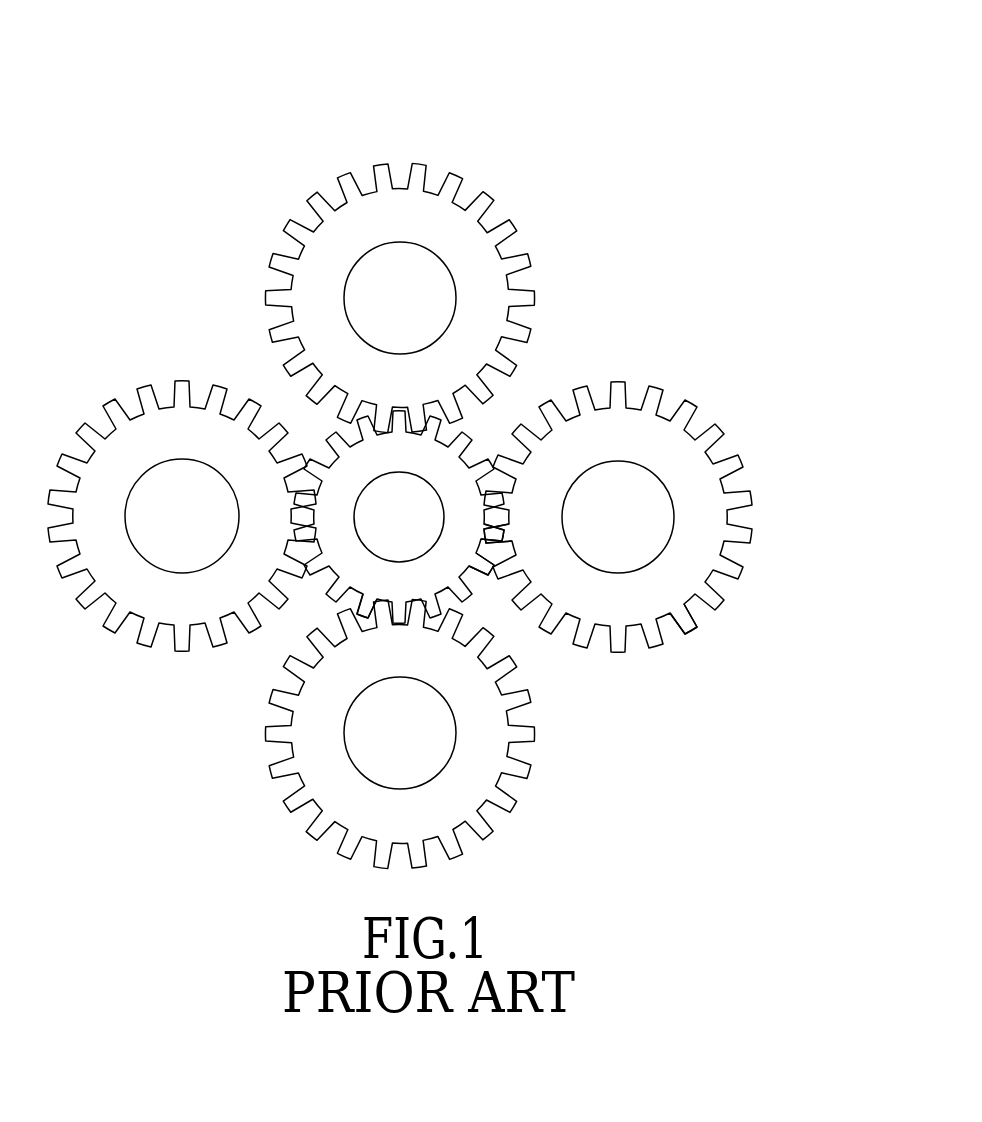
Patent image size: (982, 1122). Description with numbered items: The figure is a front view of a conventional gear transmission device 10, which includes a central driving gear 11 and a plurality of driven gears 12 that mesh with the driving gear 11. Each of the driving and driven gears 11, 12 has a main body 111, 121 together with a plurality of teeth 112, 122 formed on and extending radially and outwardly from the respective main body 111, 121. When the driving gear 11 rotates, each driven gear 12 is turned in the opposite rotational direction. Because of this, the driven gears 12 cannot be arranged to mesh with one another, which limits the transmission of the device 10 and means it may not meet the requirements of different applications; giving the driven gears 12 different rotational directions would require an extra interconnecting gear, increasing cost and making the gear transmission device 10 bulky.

The gear transmission device 10 is at (473, 128).
The driving gear 11 is at (327, 442).
The main body 111 is at (337, 545).
The teeth 112 is at (367, 595).
The driven gear 12 is at (518, 222).
The main body 121 is at (687, 557).
The teeth 122 is at (690, 620).